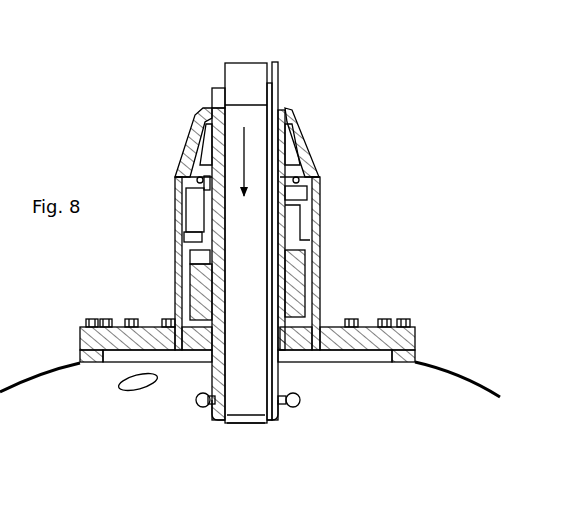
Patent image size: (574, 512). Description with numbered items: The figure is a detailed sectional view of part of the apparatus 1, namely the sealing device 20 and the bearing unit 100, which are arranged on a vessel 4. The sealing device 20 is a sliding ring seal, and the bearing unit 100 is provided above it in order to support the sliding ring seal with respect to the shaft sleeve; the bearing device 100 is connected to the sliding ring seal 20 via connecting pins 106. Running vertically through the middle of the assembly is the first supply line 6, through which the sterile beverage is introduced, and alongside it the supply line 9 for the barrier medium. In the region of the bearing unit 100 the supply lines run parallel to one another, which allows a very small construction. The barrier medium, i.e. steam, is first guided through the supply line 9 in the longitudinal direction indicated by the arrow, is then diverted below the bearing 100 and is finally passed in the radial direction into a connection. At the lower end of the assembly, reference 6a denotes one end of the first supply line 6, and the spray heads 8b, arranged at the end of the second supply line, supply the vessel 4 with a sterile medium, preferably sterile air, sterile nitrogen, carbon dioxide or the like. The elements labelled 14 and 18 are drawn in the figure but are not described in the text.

The apparatus 1 is at (243, 229).
The vessel 4 is at (107, 407).
The supply line 6 is at (242, 313).
The end of the first supply line 6a is at (270, 424).
The spray heads 8b is at (303, 400).
The supply line for the barrier medium 9 is at (279, 83).
The sleeve 14 is at (284, 143).
The collar 18 is at (212, 108).
The sealing device 20 is at (309, 298).
The bearing unit 100 is at (243, 211).
The connecting pins 106 is at (176, 215).